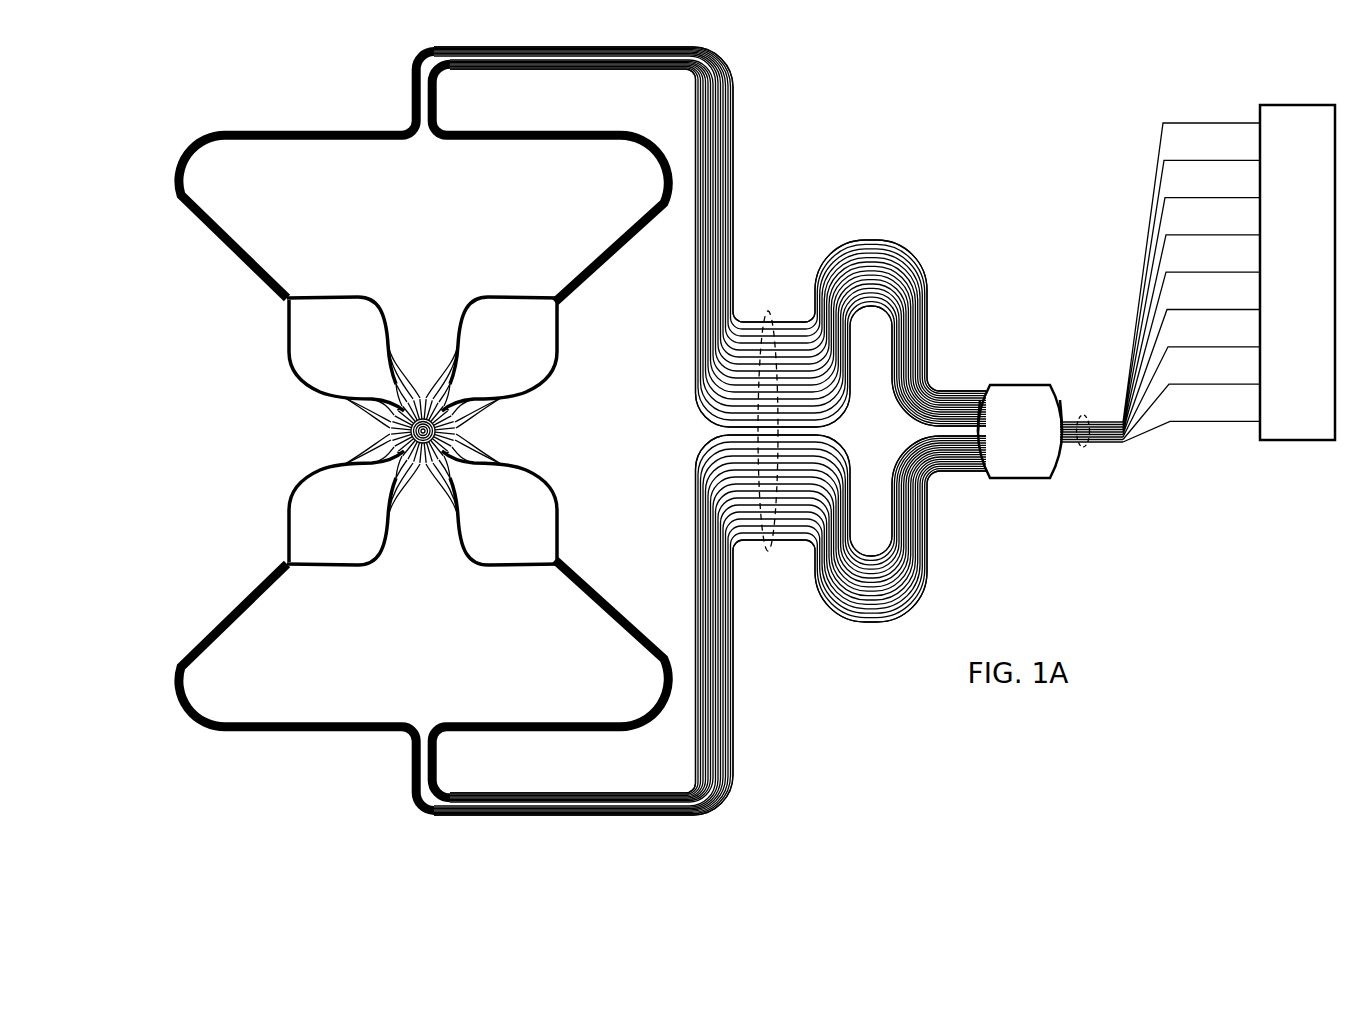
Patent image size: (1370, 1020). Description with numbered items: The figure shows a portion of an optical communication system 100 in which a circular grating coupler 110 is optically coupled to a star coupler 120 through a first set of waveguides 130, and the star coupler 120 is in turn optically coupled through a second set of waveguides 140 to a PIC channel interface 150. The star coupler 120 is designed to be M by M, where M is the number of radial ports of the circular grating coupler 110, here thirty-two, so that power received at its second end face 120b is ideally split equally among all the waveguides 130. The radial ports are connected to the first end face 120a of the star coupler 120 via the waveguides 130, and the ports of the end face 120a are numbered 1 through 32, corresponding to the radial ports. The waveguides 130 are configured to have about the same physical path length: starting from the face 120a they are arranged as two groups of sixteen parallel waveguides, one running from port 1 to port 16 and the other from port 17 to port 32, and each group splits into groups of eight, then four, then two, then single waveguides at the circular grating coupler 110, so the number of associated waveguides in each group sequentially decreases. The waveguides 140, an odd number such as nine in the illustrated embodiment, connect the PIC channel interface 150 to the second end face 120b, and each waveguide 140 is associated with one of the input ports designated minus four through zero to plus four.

The optical communication system 100 is at (1036, 169).
The circular grating coupler 110 is at (374, 432).
The star coupler 120 is at (1002, 447).
The first end face 120a is at (978, 380).
The second end face 120b is at (1064, 382).
The waveguides 130 is at (768, 552).
The waveguides 140 is at (1083, 448).
The PIC channel interface 150 is at (1314, 291).
The port 1 is at (710, 219).
The port 16 is at (718, 248).
The port 17 is at (718, 614).
The port 32 is at (710, 643).